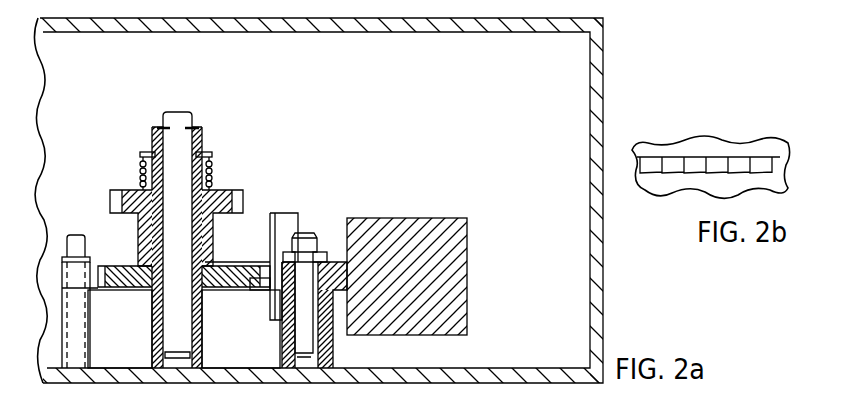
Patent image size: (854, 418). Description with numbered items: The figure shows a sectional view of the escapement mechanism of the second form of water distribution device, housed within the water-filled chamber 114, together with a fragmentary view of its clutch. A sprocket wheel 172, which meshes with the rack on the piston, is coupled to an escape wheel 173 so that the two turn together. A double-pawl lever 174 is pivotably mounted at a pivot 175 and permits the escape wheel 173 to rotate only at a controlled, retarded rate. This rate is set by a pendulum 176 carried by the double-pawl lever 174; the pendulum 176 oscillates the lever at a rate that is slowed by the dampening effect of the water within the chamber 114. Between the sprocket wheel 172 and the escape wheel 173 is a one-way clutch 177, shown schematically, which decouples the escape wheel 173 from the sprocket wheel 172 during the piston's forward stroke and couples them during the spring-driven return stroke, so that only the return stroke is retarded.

In FIG. 2a, the chamber 114 is at (392, 136).
In FIG. 2a, the sprocket wheel 172 is at (227, 190).
In FIG. 2b, the sprocket wheel 172 is at (722, 146).
In FIG. 2a, the escape wheel 173 is at (132, 288).
In FIG. 2b, the escape wheel 173 is at (663, 178).
In FIG. 2a, the double-pawl lever 174 is at (262, 281).
In FIG. 2a, the pivot 175 is at (312, 234).
In FIG. 2a, the pendulum 176 is at (433, 230).
In FIG. 2a, the one-way clutch 177 is at (222, 259).
In FIG. 2b, the one-way clutch 177 is at (622, 151).